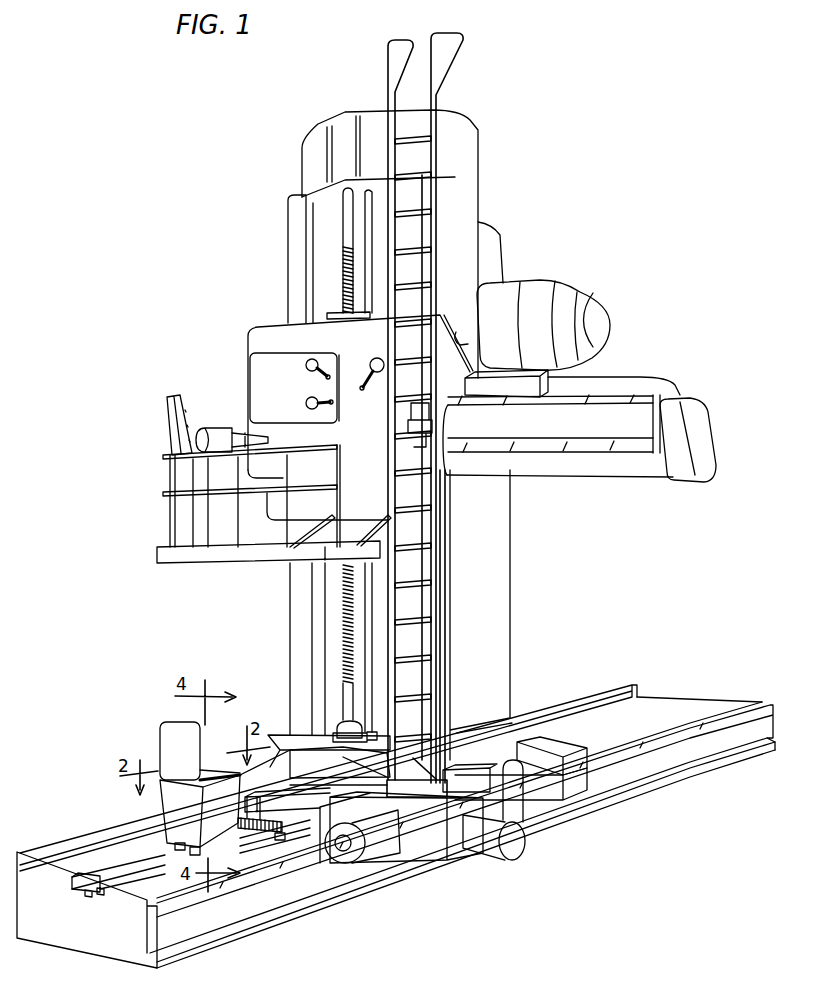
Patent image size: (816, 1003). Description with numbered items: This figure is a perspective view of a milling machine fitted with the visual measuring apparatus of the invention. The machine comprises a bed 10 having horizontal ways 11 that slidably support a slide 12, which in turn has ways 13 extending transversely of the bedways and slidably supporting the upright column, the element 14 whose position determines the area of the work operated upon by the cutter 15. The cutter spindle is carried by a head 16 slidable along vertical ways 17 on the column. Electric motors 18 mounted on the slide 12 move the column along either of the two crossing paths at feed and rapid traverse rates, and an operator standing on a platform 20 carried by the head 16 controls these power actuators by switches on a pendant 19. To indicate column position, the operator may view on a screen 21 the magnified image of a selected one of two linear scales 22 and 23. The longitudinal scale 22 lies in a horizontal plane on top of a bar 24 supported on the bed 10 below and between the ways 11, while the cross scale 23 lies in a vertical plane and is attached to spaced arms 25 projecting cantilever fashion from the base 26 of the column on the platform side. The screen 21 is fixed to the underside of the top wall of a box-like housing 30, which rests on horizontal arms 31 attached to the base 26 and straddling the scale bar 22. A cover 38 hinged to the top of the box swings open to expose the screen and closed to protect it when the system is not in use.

The bed 10 is at (107, 945).
The horizontal ways 11 is at (603, 690).
The slide 12 is at (577, 778).
The ways 13 is at (570, 748).
The element (column) 14 is at (504, 580).
The cutter 15 is at (205, 427).
The head 16 is at (257, 338).
The vertical ways 17 is at (291, 272).
The electric motors 18 is at (345, 858).
The pendant 19 is at (188, 403).
The platform 20 is at (215, 563).
The screen 21 is at (205, 770).
The linear scale (longitudinal scale) 22 is at (136, 862).
The cross scale 23 is at (270, 832).
The bar 24 is at (78, 890).
The spaced arms 25 is at (315, 775).
The base 26 is at (290, 735).
The box-like housing 30 is at (175, 800).
The horizontal arms 31 is at (181, 843).
The cover 38 is at (170, 732).